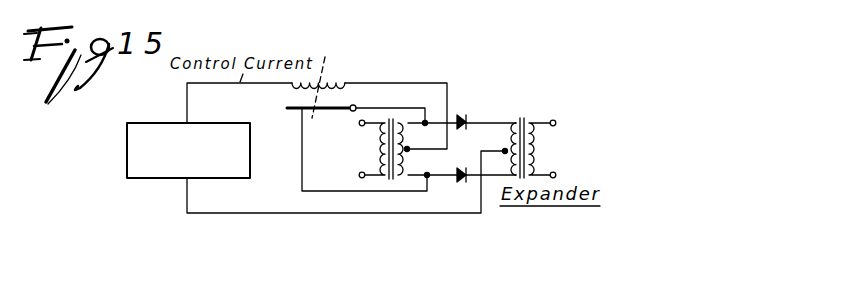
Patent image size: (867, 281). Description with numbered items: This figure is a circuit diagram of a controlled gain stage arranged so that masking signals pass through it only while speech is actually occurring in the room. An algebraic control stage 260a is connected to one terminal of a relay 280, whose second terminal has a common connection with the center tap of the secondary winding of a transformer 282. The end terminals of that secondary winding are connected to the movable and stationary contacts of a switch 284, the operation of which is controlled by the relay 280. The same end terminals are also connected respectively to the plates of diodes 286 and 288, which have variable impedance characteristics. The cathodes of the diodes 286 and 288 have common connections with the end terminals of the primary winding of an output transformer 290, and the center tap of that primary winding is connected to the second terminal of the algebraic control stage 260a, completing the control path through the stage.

The algebraic control stage 260a is at (127, 139).
The relay 280 is at (327, 80).
The transformer 282 is at (389, 182).
The switch 284 is at (296, 113).
The diode 286 is at (463, 116).
The diode 288 is at (460, 181).
The output transformer 290 is at (523, 117).